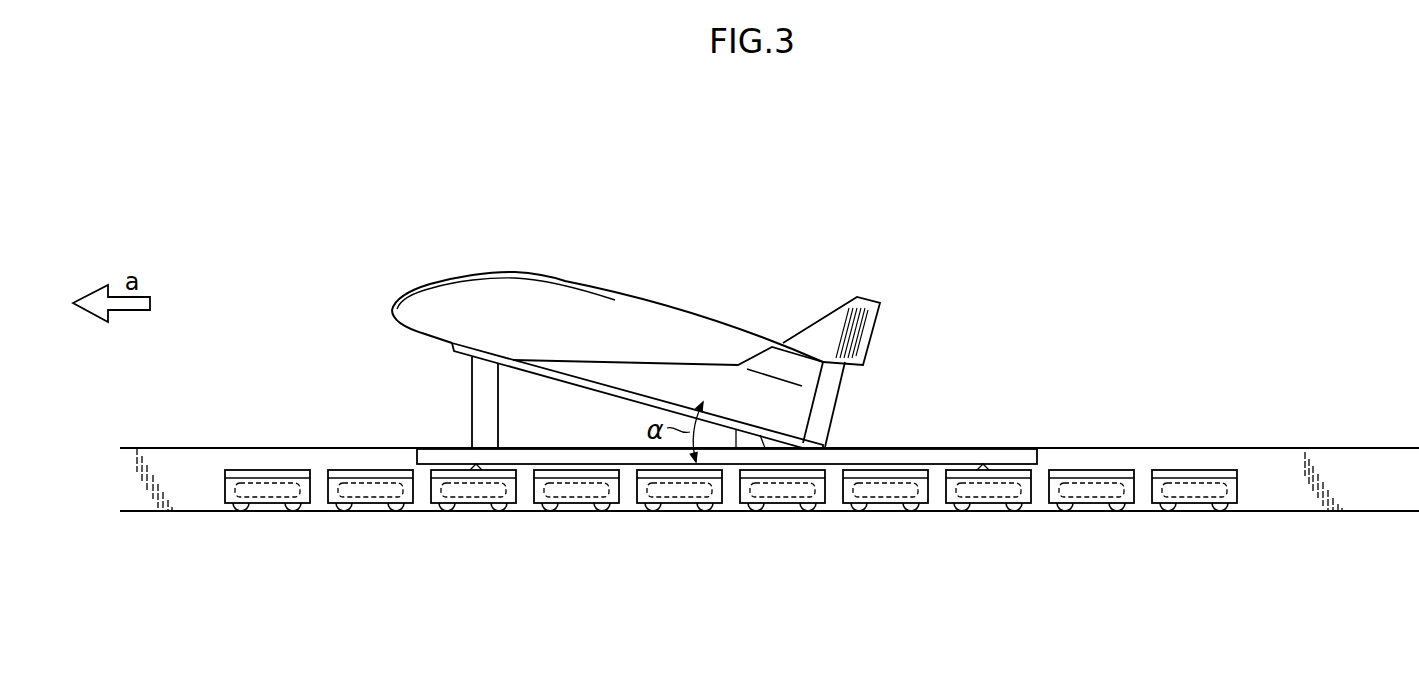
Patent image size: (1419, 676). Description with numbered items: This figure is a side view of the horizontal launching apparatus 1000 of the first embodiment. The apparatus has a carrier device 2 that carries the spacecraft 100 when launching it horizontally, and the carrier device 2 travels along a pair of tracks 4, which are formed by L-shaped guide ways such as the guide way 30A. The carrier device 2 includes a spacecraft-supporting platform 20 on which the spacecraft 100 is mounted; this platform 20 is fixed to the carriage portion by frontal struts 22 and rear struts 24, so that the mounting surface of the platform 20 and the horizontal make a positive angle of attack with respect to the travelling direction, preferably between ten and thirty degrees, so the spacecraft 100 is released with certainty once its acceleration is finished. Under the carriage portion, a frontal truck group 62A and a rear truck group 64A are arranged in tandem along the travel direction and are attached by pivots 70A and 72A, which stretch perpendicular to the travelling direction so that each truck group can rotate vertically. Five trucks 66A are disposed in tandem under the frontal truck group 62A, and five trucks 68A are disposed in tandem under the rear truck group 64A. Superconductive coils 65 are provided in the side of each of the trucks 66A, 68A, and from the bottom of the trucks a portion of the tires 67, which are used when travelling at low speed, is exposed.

The horizontal launching apparatus 1000 is at (1160, 280).
The spacecraft 100 is at (593, 347).
The carrier device 2 is at (398, 326).
The tracks 4 is at (1270, 446).
The L-shaped guide way 30A is at (1365, 465).
The spacecraft-supporting platform 20 is at (608, 395).
The frontal struts 22 is at (490, 412).
The rear struts 24 is at (742, 438).
The frontal truck group 62A is at (284, 469).
The rear truck group 64A is at (1135, 468).
The pivot 70A is at (463, 466).
The pivot 72A is at (983, 463).
The superconductive coils 65 is at (256, 513).
The tires 67 is at (394, 510).
The trucks 66A is at (303, 508).
The trucks 68A is at (812, 512).